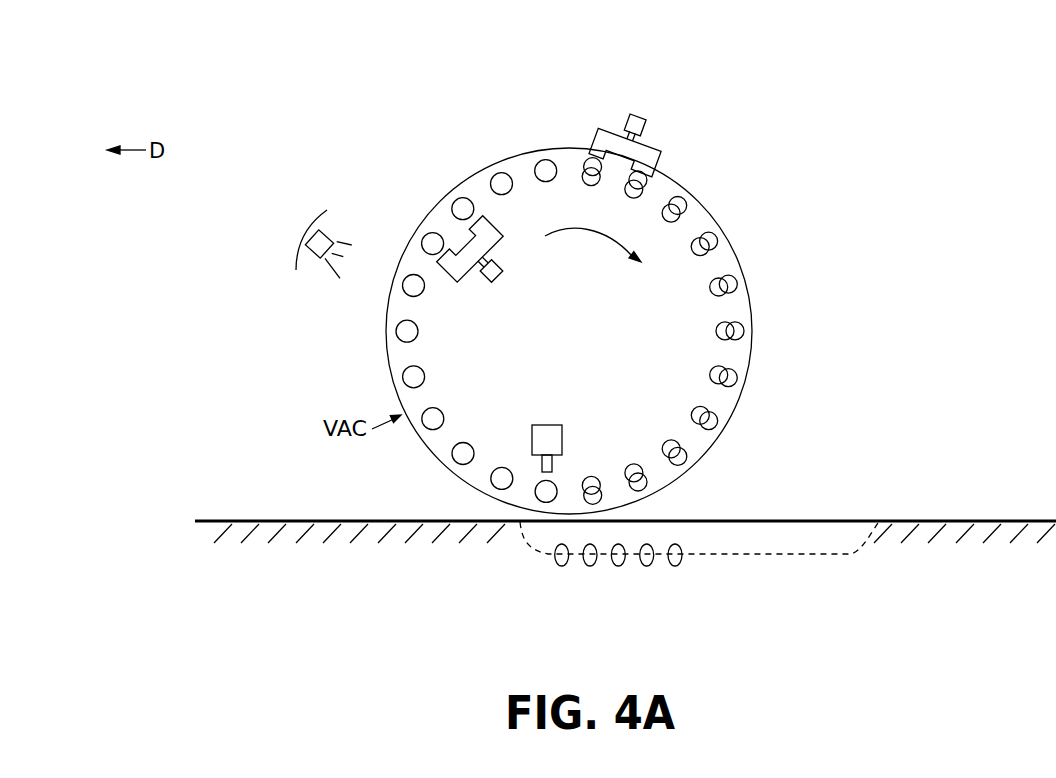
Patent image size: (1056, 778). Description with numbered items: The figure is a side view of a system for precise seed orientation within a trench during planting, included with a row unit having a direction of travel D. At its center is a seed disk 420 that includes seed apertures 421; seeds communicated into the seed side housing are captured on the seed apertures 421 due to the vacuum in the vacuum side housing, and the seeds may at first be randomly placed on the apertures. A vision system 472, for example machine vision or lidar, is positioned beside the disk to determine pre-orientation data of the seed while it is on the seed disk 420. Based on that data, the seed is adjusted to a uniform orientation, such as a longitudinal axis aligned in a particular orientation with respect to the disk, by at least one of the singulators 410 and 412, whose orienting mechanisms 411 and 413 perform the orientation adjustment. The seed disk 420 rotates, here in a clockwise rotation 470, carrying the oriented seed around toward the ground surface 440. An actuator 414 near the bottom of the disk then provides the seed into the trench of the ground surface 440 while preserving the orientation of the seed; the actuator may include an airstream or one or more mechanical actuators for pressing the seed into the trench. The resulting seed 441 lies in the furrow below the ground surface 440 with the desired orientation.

The singulator 410 is at (485, 217).
The orienting mechanism 411 is at (483, 283).
The singulator 412 is at (693, 117).
The orienting mechanism 413 is at (648, 124).
The actuator 414 is at (552, 424).
The seed disk 420 is at (563, 150).
The seed apertures 421 is at (420, 240).
The ground surface 440 is at (243, 518).
The seed 441 is at (563, 568).
The clockwise rotation 470 is at (590, 236).
The vision system 472 is at (308, 238).